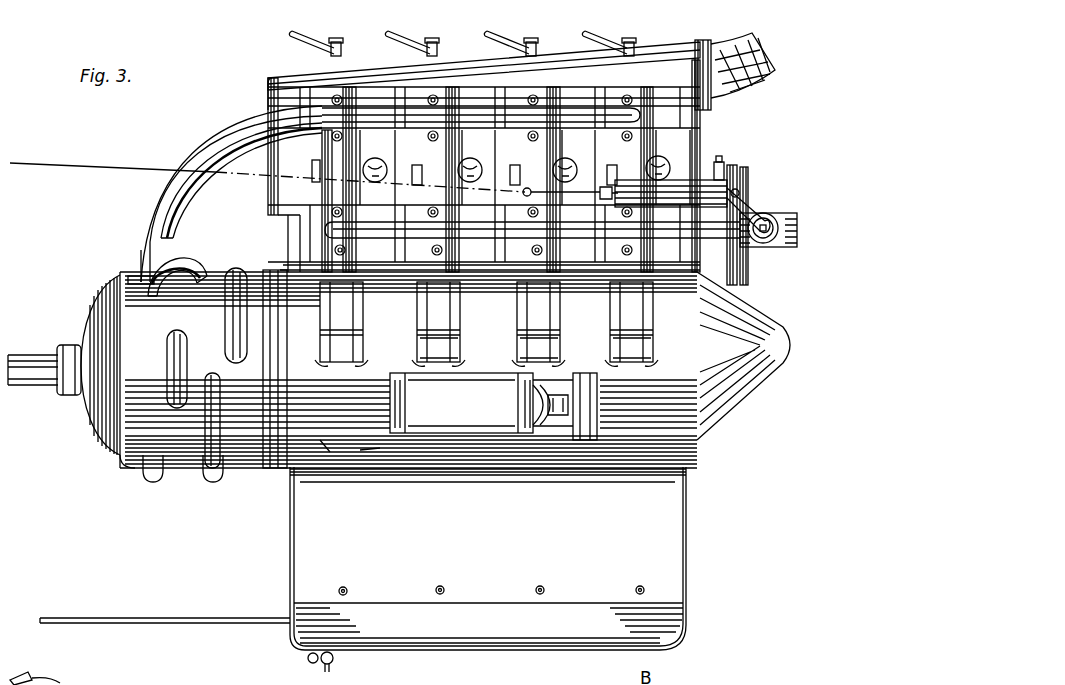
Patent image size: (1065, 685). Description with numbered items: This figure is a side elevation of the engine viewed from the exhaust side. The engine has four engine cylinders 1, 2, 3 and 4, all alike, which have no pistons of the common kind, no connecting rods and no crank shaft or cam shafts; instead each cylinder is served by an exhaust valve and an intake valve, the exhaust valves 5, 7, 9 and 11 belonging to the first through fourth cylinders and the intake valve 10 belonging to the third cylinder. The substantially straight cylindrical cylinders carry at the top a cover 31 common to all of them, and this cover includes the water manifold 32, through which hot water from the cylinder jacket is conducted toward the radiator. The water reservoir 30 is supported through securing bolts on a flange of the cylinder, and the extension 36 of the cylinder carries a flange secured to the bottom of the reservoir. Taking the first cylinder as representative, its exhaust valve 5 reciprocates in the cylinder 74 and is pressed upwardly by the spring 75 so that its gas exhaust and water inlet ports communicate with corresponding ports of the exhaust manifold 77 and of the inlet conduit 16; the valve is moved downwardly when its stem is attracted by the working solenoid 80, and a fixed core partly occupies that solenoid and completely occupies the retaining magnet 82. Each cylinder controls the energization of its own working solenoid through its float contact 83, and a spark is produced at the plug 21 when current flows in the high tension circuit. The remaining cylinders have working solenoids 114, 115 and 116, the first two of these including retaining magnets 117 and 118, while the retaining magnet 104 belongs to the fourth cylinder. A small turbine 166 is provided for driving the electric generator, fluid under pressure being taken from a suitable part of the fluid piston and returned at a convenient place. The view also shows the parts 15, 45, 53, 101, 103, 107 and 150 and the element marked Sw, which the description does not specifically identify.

The engine cylinder 1 is at (662, 133).
The engine cylinder 2 is at (566, 140).
The engine cylinder 3 is at (466, 142).
The engine cylinder 4 is at (372, 140).
The exhaust valve 5 is at (638, 84).
The exhaust valve 7 is at (545, 86).
The exhaust valve 9 is at (449, 87).
The exhaust valve 11 is at (352, 88).
The intake valve 10 is at (318, 228).
The crankcase 15 is at (145, 457).
The inlet conduit 16 is at (742, 250).
The spark plug 21 is at (343, 50).
The water reservoir 30 is at (740, 320).
The cover 31 is at (283, 95).
The water manifold 32 is at (472, 66).
The extension of the cylinder 36 is at (300, 519).
The pan bottom 45 is at (489, 628).
The switch bracket 53 is at (736, 168).
The cylinder 74 is at (322, 148).
The spring 75 is at (145, 212).
The exhaust manifold 77 is at (252, 138).
The working solenoid 80 is at (640, 316).
The retaining magnet 82 is at (640, 348).
The float contact 83 is at (378, 159).
The lever 101 is at (745, 190).
The link 103 is at (752, 212).
The retaining magnet 104 is at (768, 219).
The bearing housing 107 is at (500, 440).
The working solenoid 114 is at (552, 320).
The working solenoid 115 is at (459, 320).
The working solenoid 116 is at (362, 320).
The retaining magnet 117 is at (552, 350).
The retaining magnet 118 is at (459, 350).
The control rod 150 is at (89, 170).
The small turbine 166 is at (600, 422).
The switch Sw is at (700, 188).